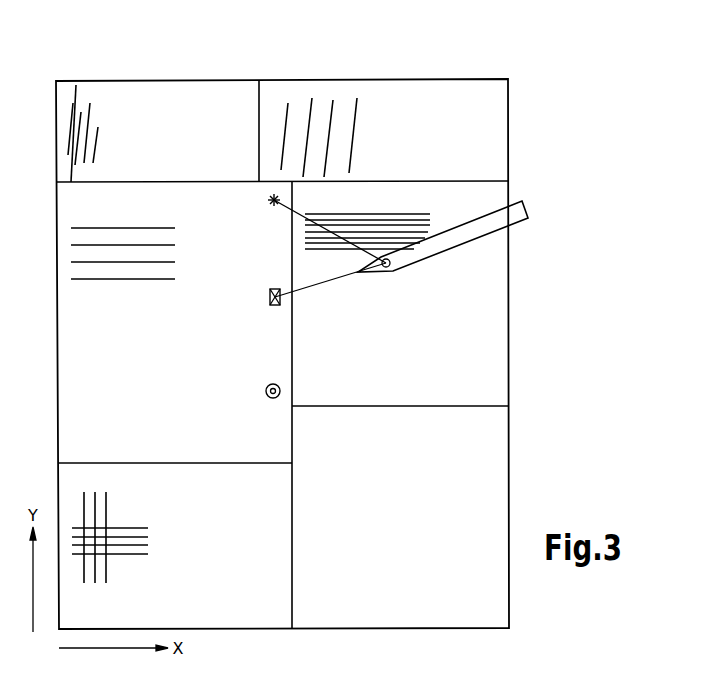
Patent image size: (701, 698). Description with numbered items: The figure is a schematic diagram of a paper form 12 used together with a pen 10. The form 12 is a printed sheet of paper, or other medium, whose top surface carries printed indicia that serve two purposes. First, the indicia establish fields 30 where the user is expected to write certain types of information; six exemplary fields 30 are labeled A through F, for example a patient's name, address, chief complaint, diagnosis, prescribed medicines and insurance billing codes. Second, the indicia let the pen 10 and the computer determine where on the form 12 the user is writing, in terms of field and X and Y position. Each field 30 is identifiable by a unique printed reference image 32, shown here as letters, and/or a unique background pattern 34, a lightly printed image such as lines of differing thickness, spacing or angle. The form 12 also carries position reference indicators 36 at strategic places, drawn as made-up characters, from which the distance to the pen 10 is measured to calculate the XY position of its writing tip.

The pen 10 is at (460, 237).
The paper form 12 is at (475, 95).
The fields 30 is at (192, 103).
The printed reference image 32 is at (70, 82).
The background pattern 34 is at (92, 108).
The position reference indicators 36 is at (270, 207).